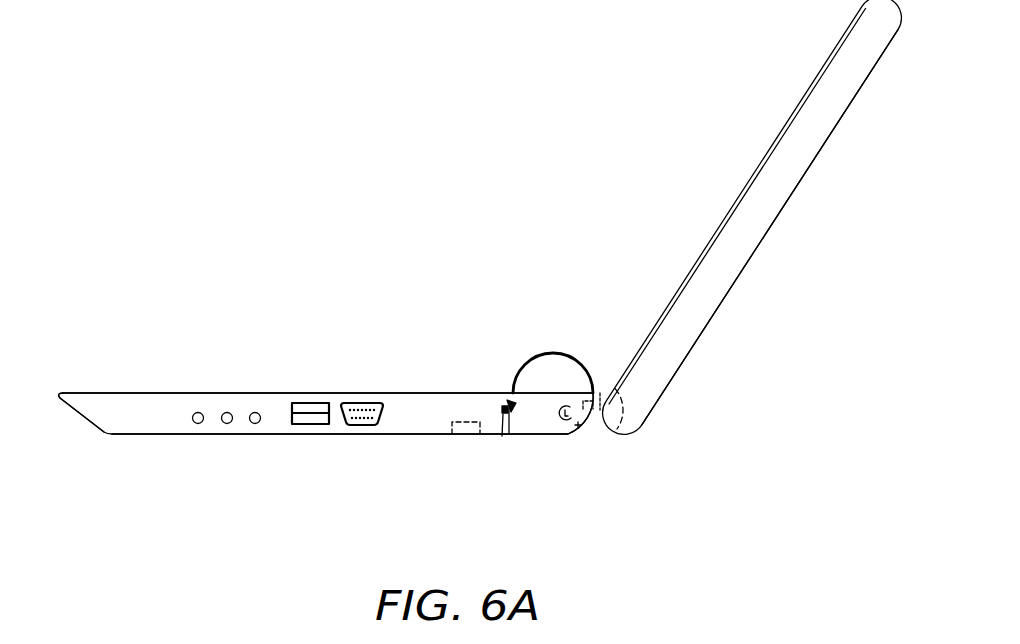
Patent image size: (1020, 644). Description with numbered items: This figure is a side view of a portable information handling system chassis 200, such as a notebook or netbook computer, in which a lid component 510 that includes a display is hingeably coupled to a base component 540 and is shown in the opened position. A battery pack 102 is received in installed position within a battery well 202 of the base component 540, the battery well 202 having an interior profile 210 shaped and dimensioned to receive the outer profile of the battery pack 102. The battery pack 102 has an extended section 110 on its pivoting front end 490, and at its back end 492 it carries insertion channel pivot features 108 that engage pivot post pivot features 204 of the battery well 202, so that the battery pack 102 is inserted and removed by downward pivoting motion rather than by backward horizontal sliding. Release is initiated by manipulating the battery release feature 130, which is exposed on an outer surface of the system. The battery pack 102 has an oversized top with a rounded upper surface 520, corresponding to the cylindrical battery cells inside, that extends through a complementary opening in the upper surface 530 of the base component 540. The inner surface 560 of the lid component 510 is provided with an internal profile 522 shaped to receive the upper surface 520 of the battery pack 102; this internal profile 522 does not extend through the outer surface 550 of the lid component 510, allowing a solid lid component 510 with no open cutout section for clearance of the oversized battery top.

The battery pack 102 is at (547, 418).
The insertion channel pivot features 108 is at (573, 420).
The extended section 110 is at (509, 434).
The battery release feature 130 is at (458, 436).
The portable information handling system chassis 200 is at (127, 437).
The battery well 202 is at (500, 407).
The pivot post pivot features 204 is at (590, 400).
The interior profile 210 is at (509, 404).
The front end 490 is at (502, 436).
The back end 492 is at (593, 428).
The lid component 510 is at (717, 288).
The rounded upper surface 520 is at (533, 357).
The internal profile 522 is at (623, 408).
The upper surface 530 is at (277, 393).
The base component 540 is at (90, 413).
The outer surface 550 is at (755, 252).
The inner surface 560 is at (710, 240).